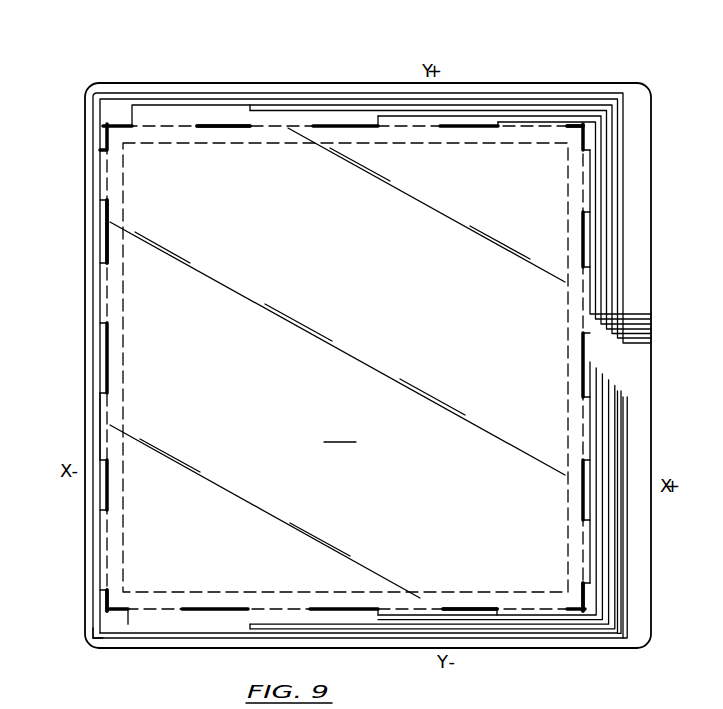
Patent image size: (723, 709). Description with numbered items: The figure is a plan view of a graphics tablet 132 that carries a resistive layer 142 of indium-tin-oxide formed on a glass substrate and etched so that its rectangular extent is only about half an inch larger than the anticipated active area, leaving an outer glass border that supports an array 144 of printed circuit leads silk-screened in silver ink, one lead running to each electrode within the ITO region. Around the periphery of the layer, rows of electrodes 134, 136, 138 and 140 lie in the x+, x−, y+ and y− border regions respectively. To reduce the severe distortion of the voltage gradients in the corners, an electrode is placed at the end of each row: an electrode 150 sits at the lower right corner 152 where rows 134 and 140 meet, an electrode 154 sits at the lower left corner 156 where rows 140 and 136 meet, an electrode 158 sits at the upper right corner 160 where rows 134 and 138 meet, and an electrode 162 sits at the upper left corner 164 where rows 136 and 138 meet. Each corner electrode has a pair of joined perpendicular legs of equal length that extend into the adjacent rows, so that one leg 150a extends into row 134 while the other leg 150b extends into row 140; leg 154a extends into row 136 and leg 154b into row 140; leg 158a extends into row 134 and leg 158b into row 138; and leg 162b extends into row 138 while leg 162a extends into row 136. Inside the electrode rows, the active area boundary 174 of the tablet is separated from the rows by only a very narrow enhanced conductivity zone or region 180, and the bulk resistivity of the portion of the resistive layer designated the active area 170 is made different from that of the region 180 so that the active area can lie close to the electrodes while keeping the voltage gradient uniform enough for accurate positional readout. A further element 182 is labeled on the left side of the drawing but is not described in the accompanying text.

The graphics tablet 132 is at (596, 64).
The row of electrodes 134 is at (583, 201).
The row of electrodes 136 is at (107, 200).
The row of electrodes 138 is at (194, 126).
The row of electrodes 140 is at (506, 608).
The resistive layer 142 is at (547, 219).
The array of printed circuit leads 144 is at (638, 354).
The corner electrode 150 is at (590, 610).
The leg of electrode 150 150a is at (588, 586).
The leg of electrode 150 150b is at (585, 615).
The lower right corner 152 is at (639, 636).
The corner electrode 154 is at (107, 611).
The leg of electrode 154 154a is at (104, 592).
The leg of electrode 154 154b is at (125, 612).
The lower left corner 156 is at (90, 636).
The corner electrode 158 is at (590, 124).
The leg of electrode 158 158a is at (590, 150).
The leg of electrode 158 158b is at (580, 124).
The upper right corner 160 is at (634, 93).
The corner electrode 162 is at (105, 126).
The leg of electrode 162 162a is at (107, 138).
The leg of electrode 162 162b is at (125, 124).
The upper left corner 164 is at (92, 96).
The active area 170 is at (337, 363).
The active area boundary 174 is at (438, 592).
The enhanced conductivity region 180 is at (107, 291).
The electrode link 182 is at (105, 408).